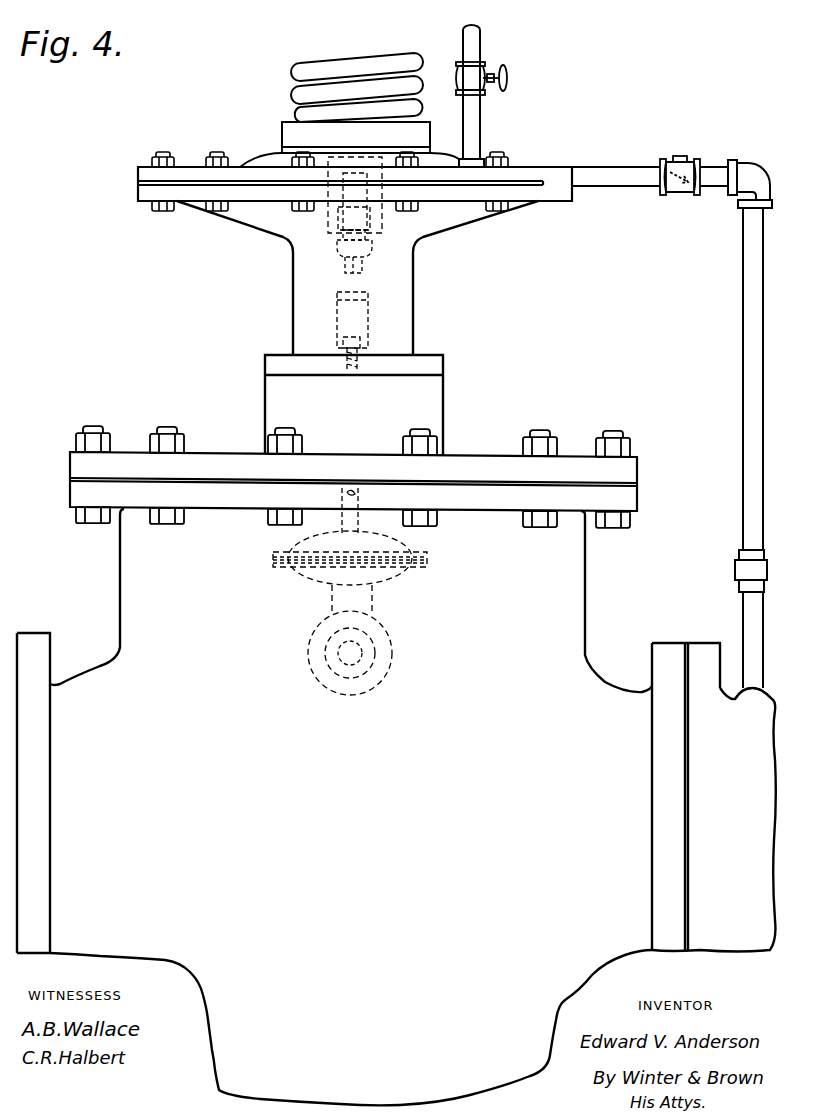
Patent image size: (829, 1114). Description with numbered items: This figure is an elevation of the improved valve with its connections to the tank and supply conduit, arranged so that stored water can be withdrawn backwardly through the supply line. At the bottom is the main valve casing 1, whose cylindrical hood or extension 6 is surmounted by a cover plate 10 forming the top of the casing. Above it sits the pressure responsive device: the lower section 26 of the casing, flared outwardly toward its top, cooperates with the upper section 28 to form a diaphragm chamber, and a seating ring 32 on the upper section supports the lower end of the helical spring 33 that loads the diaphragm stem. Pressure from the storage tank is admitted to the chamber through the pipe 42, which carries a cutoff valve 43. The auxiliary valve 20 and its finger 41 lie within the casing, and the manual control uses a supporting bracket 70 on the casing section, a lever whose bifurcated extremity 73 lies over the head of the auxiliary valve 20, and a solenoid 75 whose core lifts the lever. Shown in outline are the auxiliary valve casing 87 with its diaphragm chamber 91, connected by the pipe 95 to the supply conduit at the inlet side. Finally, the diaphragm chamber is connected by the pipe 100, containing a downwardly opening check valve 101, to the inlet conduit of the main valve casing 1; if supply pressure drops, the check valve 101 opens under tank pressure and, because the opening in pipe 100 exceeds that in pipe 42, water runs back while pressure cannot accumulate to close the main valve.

The main valve casing 1 is at (617, 677).
The cylindrical hood or extension 6 is at (120, 563).
The cover plate 10 is at (490, 464).
The auxiliary valve 20 is at (367, 257).
The lower section of casing 26 is at (298, 320).
The upper section of casing 28 is at (240, 173).
The seating ring 32 is at (282, 132).
The helical spring 33 is at (292, 70).
The finger 41 is at (373, 241).
The pipe 42 is at (481, 119).
The cutoff valve 43 is at (483, 67).
The supporting bracket 70 is at (368, 317).
The bifurcated extremity 73 is at (337, 246).
The solenoid 75 is at (328, 220).
The valve casing 87 is at (393, 646).
The diaphragm chamber 91 is at (412, 570).
The pipe 95 is at (313, 524).
The pipe 100 is at (610, 175).
The check valve 101 is at (690, 158).